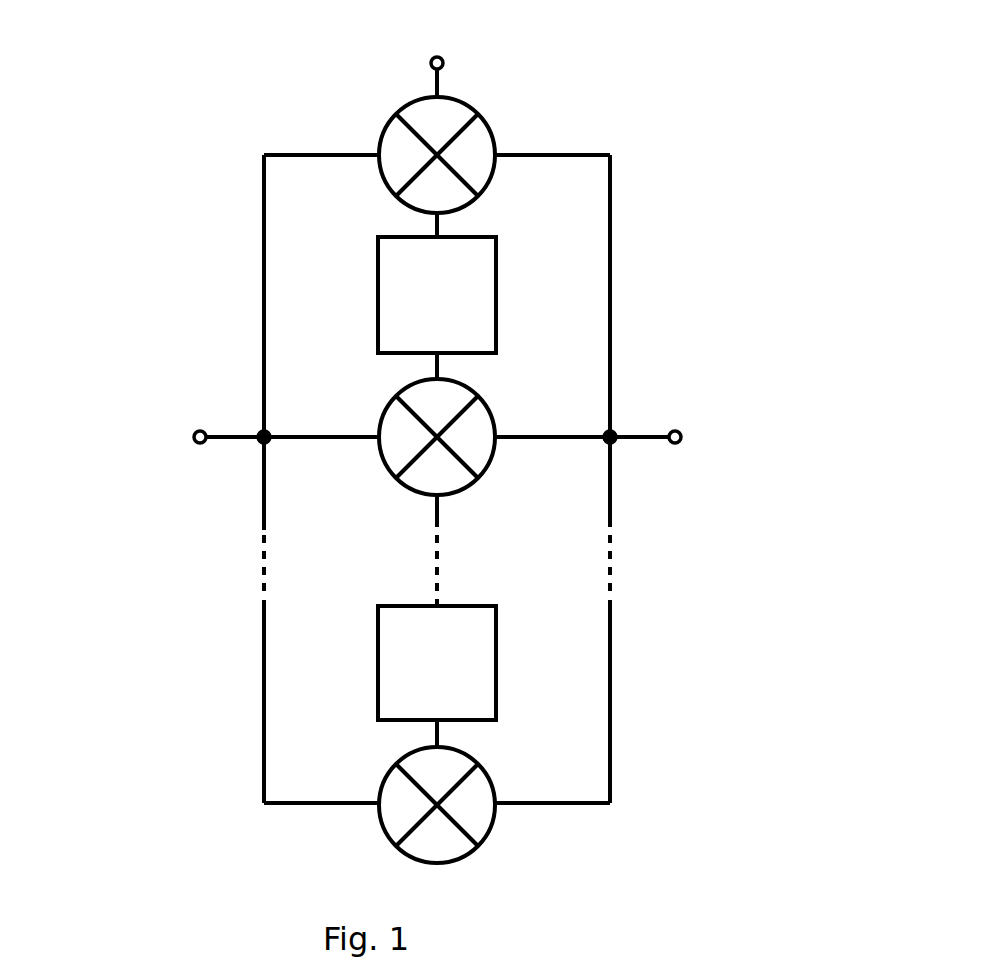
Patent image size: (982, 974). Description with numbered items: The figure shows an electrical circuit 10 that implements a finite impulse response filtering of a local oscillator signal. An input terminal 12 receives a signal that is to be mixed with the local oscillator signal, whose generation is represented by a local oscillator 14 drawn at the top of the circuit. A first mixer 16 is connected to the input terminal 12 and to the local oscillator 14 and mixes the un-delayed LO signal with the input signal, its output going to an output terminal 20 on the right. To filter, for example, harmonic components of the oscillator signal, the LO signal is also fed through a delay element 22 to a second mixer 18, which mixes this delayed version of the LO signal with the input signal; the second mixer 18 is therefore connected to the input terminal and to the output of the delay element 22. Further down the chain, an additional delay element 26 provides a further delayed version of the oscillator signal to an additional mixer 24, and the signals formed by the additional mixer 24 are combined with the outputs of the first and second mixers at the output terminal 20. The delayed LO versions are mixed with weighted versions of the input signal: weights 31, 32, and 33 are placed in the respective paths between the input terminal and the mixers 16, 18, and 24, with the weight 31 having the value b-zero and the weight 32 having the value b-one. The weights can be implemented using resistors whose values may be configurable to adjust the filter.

The electrical circuit 10 is at (142, 324).
The input terminal 12 is at (205, 446).
The local oscillator 14 is at (468, 37).
The first mixer 16 is at (497, 172).
The second mixer 18 is at (483, 455).
The output terminal 20 is at (673, 428).
The delay element 22 is at (488, 292).
The additional mixer 24 is at (390, 827).
The additional delay element 26 is at (462, 617).
The weight 31 is at (292, 127).
The weight 32 is at (295, 395).
The weight 33 is at (300, 755).